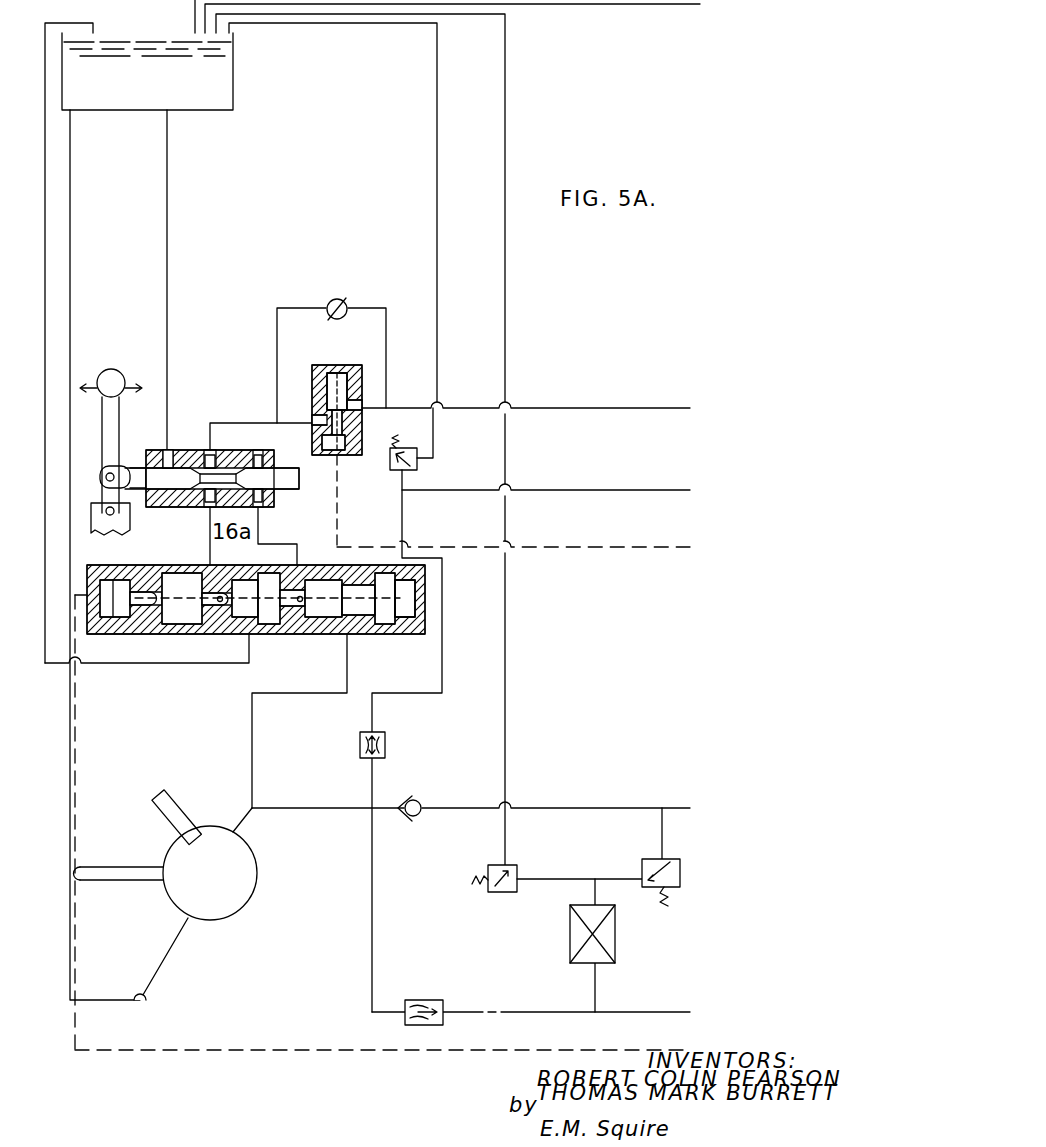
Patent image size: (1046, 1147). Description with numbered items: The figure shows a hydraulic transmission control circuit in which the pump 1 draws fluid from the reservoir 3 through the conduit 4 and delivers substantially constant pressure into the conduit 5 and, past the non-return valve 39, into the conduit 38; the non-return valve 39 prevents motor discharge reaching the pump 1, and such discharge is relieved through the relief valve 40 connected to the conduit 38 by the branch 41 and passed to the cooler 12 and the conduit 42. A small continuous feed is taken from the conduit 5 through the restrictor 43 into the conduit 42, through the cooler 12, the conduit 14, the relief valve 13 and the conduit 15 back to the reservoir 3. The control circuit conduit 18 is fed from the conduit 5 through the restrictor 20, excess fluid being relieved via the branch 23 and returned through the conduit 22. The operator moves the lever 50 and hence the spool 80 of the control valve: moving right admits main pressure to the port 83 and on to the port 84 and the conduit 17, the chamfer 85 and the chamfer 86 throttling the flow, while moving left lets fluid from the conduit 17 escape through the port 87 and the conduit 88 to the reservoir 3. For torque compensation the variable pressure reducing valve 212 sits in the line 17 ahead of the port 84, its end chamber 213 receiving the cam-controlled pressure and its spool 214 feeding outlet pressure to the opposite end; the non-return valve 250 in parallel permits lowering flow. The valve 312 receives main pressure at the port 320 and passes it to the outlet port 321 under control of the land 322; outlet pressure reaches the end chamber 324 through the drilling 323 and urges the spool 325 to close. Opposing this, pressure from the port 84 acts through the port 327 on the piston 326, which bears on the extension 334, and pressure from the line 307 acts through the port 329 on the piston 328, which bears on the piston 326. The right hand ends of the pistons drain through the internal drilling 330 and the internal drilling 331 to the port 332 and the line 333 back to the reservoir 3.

The pump 1 is at (236, 899).
The reservoir 3 is at (236, 88).
The conduit 4 is at (76, 773).
The conduit 5 is at (334, 808).
The cooler 12 is at (571, 931).
The relief valve 13 is at (515, 866).
The conduit 14 is at (565, 878).
The conduit 15 is at (512, 738).
The loop circuit conduit 17 is at (471, 409).
The conduit 18 is at (476, 489).
The restrictor 20 is at (388, 748).
The conduit 22 is at (409, 450).
The branch 23 is at (401, 488).
The conduit 38 is at (466, 809).
The non-return valve 39 is at (419, 800).
The relief valve 40 is at (659, 881).
The branch 41 is at (662, 836).
The conduit 42 is at (590, 983).
The restrictor 43 is at (426, 1002).
The lever 50 is at (114, 378).
The spool 80 is at (282, 491).
The port 83 is at (259, 507).
The port 84 is at (211, 447).
The chamfer 85 is at (247, 482).
The chamfer 86 is at (179, 476).
The port 87 is at (166, 452).
The conduit 88 is at (168, 352).
The variable pressure reducing valve 212 is at (349, 365).
The end chamber 213 is at (341, 463).
The spool 214 is at (316, 370).
The non-return valve 250 is at (349, 300).
The line 307 is at (301, 1048).
The valve 312 is at (424, 628).
The port 320 is at (348, 638).
The outlet port 321 is at (298, 563).
The land 322 is at (327, 614).
The drilling 323 is at (396, 632).
The end chamber 324 is at (402, 606).
The spool 325 is at (369, 585).
The piston 326 is at (189, 608).
The port 327 is at (166, 580).
The piston 328 is at (119, 588).
The port 329 is at (88, 594).
The internal drilling 330 is at (145, 612).
The internal drilling 331 is at (227, 608).
The port 332 is at (260, 628).
The line 333 is at (154, 665).
The extension 334 is at (203, 612).